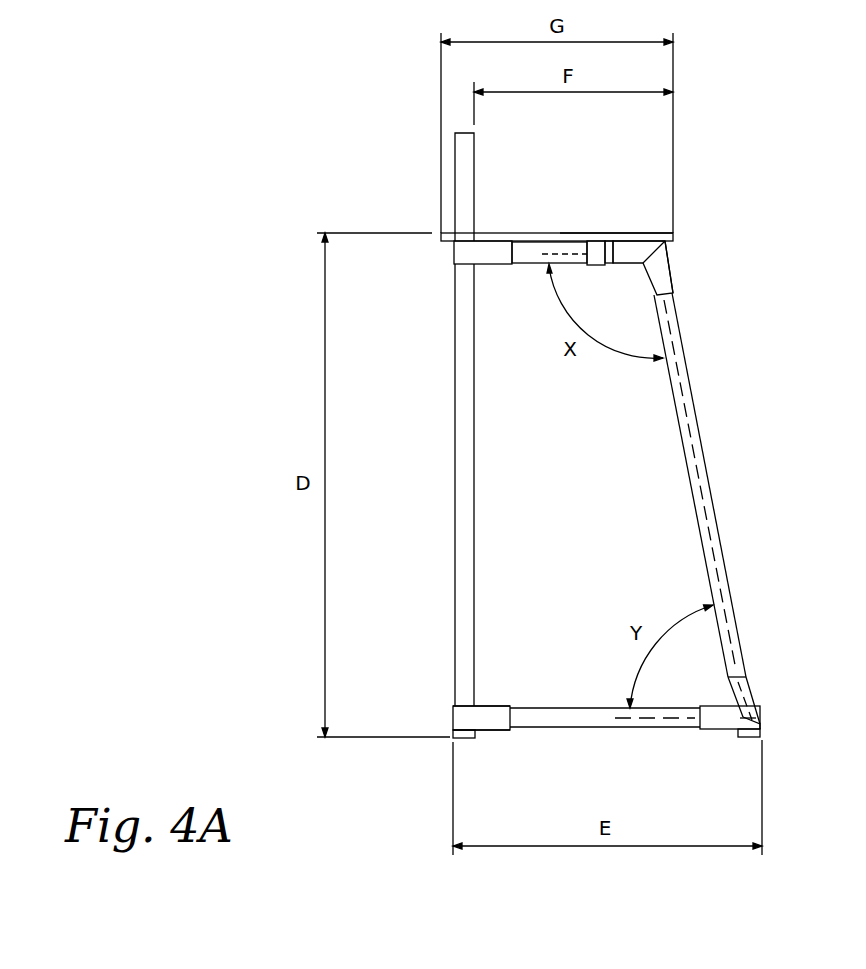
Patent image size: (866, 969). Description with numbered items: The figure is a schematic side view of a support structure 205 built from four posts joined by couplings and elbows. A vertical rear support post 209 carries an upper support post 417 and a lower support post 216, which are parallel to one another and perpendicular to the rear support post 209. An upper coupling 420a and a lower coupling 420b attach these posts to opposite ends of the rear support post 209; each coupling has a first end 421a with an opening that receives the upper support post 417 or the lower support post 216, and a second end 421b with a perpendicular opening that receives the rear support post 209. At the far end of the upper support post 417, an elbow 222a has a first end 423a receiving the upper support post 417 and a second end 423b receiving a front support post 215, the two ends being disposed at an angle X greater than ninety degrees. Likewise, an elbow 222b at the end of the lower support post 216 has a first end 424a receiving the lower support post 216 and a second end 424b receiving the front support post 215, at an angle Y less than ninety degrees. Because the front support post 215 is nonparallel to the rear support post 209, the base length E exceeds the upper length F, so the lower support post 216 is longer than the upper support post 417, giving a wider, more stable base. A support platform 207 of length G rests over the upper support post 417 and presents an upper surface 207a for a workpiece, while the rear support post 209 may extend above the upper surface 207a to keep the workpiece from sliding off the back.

The support structure 205 is at (350, 152).
The support platform 207 is at (441, 243).
The upper surface 207a is at (592, 234).
The rear support post 209 is at (455, 488).
The front support post 215 is at (707, 478).
The lower support post 216 is at (592, 729).
The upper support post 417 is at (520, 250).
The elbow 222a is at (672, 258).
The elbow 222b is at (752, 718).
The first end 423a is at (620, 268).
The second end 423b is at (673, 275).
The upper coupling 420a is at (493, 266).
The lower coupling 420b is at (493, 731).
The first end 421a is at (453, 709).
The second end 421b is at (497, 706).
The first end 424a is at (712, 729).
The second end 424b is at (745, 690).